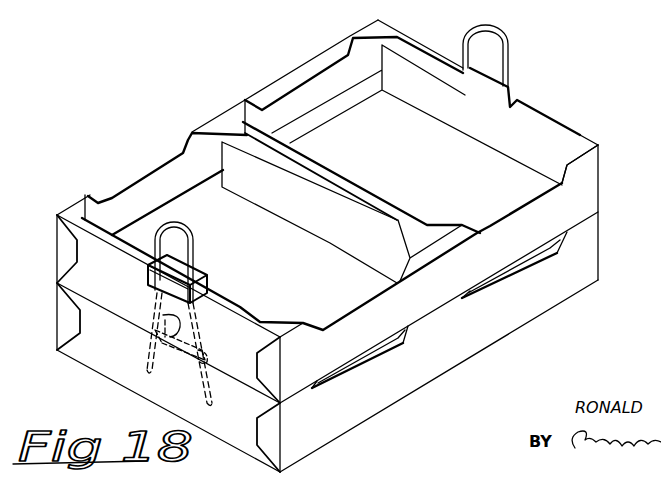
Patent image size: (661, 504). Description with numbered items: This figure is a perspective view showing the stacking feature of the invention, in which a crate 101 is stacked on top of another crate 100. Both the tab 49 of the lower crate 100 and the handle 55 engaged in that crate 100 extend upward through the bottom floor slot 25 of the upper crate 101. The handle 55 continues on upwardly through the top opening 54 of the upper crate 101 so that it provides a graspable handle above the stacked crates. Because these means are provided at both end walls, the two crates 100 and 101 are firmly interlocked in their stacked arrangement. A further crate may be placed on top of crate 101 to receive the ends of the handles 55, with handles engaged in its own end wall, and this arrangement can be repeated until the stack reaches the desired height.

The crate 100 is at (570, 287).
The crate 101 is at (587, 182).
The handle 55 is at (193, 225).
The top opening 54 is at (208, 281).
The tab 49 is at (163, 315).
The bottom floor slot 25 is at (172, 347).